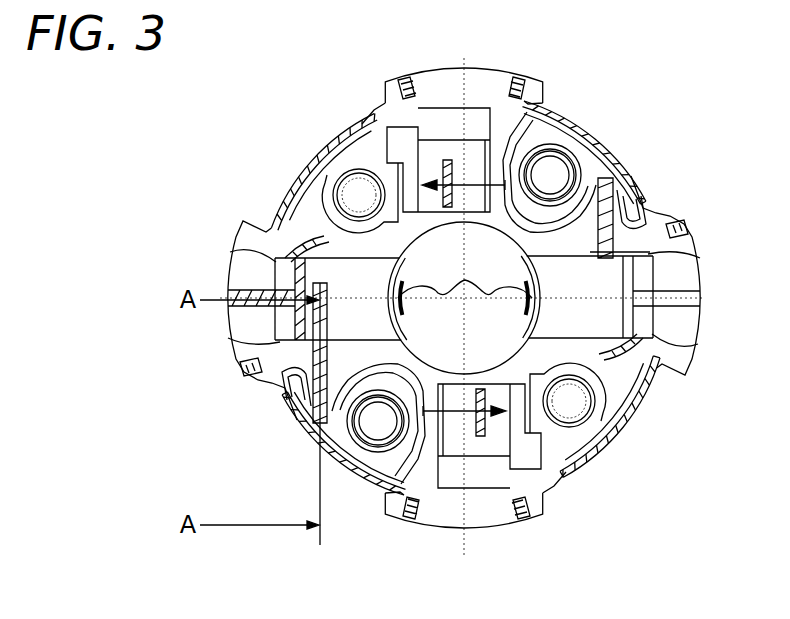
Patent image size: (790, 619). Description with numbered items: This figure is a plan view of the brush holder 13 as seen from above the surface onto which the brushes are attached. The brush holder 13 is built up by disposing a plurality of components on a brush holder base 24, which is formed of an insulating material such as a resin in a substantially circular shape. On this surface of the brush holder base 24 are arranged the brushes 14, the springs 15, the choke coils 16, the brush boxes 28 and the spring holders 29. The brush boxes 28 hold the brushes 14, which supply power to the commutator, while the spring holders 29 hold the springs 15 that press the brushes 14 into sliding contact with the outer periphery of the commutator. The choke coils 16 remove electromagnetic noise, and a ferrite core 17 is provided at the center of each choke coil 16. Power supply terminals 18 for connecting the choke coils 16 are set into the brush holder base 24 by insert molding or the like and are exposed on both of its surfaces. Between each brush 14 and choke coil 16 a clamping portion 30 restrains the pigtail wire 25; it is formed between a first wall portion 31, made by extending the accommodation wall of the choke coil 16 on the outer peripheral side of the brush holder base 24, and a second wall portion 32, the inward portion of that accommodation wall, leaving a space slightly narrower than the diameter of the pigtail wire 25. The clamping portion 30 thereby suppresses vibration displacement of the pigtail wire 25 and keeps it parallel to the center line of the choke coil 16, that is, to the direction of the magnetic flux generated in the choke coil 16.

The brush holder 13 is at (672, 68).
The brush 14 is at (464, 298).
The spring 15 is at (340, 165).
The choke coil 16 is at (603, 152).
The ferrite core 17 is at (550, 170).
The power supply terminal 18 is at (460, 132).
The brush holder base 24 is at (506, 68).
The pigtail wire 25 is at (615, 228).
The brush box 28 is at (290, 268).
The spring holder 29 is at (355, 197).
The clamping portion 30 is at (628, 157).
The first wall portion 31 is at (628, 168).
The second wall portion 32 is at (632, 204).